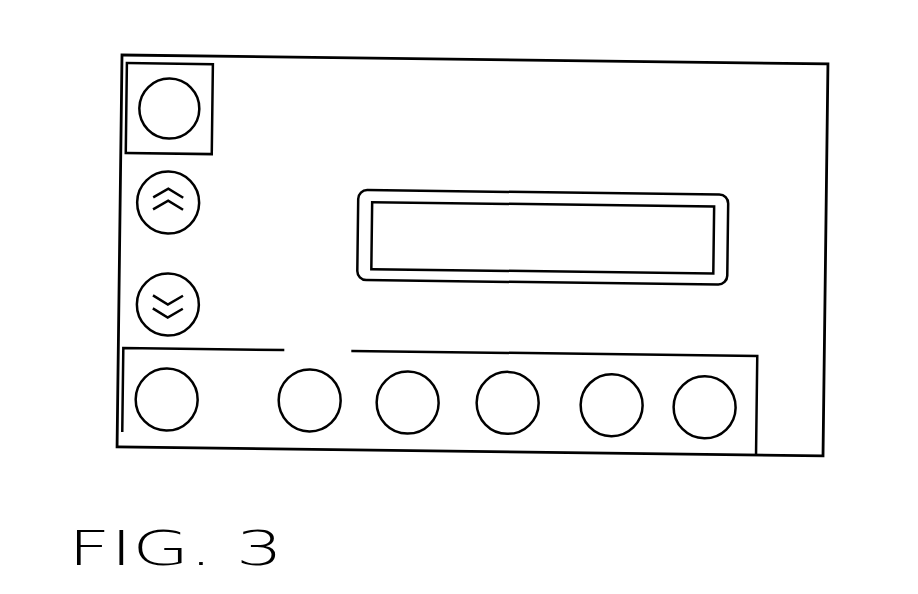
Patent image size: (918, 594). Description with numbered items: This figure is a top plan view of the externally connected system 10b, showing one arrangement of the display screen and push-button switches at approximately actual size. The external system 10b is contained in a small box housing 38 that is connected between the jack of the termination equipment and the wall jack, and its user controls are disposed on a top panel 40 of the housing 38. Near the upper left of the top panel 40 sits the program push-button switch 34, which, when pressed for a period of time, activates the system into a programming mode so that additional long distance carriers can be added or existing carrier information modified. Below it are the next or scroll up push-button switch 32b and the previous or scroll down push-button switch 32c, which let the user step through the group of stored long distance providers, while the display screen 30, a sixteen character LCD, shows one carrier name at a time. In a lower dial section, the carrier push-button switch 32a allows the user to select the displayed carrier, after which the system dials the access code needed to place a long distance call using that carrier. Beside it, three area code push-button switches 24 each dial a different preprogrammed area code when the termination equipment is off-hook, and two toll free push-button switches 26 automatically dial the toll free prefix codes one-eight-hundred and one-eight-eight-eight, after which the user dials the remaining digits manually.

The external system 10b is at (420, 34).
The top panel 40 is at (248, 93).
The program push-button switch 34 is at (141, 113).
The next push-button switch 32b is at (141, 203).
The previous push-button switch 32c is at (142, 303).
The display screen 30 is at (549, 187).
The housing 38 is at (253, 447).
The carrier push-button switch 32a is at (142, 397).
The area code push-button switch 24 is at (314, 429).
The toll free push-button switch 26 is at (705, 432).